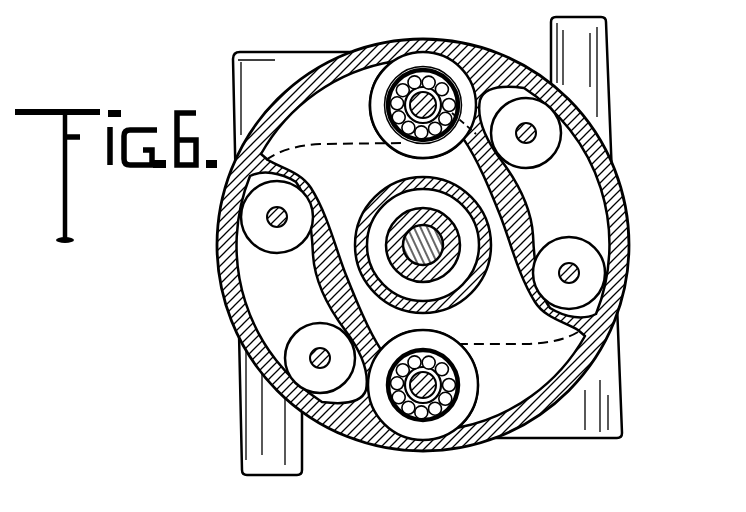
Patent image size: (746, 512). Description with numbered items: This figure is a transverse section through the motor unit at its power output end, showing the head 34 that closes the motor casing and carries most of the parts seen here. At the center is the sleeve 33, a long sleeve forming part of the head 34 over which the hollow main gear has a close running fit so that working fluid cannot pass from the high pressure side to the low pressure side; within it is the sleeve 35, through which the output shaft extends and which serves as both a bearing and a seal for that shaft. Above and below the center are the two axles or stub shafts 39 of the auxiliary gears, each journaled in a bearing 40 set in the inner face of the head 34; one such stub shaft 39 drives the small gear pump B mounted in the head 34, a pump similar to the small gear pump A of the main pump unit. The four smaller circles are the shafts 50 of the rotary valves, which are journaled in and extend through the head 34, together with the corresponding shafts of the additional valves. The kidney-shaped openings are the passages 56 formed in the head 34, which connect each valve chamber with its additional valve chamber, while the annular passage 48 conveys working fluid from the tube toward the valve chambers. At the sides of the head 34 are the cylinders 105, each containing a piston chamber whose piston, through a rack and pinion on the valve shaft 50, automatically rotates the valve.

The cylinder 105 is at (243, 86).
The head 34 is at (428, 232).
The axle or stub shaft 39 is at (427, 90).
The bearing 40 is at (387, 107).
The shaft 50 is at (530, 130).
The passages 56 is at (253, 287).
The annular passage 48 is at (385, 276).
The sleeve 33 is at (394, 192).
The small gear pump A is at (407, 228).
The sleeve 35 is at (438, 260).
The small gear pump B is at (457, 364).